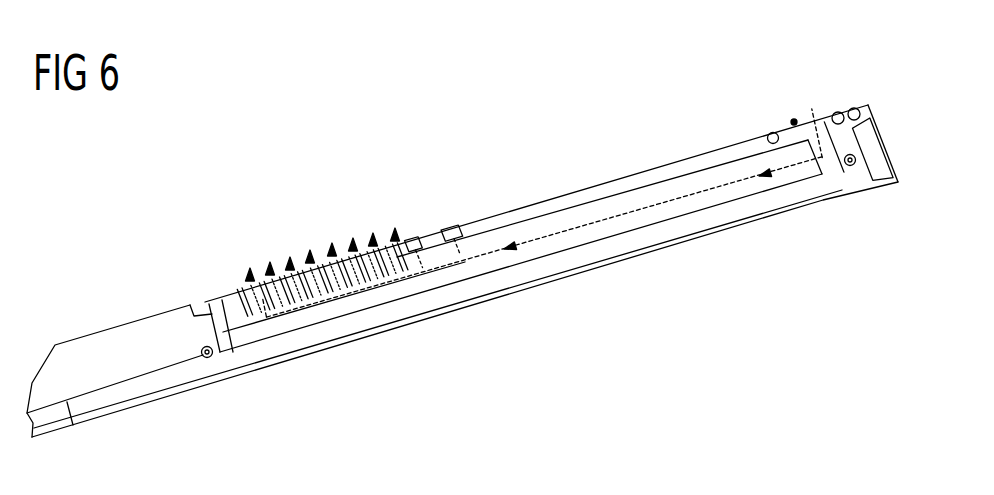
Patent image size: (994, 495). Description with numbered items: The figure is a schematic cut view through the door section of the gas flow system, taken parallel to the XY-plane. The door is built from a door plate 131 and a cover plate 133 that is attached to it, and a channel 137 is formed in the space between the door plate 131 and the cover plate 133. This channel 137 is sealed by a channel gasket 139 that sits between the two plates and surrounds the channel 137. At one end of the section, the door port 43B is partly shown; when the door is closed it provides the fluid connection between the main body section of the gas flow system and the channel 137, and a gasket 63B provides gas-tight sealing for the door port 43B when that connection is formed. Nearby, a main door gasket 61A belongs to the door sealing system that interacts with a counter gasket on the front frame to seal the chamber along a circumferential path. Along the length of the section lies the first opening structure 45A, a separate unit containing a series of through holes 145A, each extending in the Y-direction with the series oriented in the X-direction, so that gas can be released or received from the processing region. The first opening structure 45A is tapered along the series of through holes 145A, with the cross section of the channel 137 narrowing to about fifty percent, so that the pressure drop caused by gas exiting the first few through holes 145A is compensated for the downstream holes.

The door plate 131 is at (143, 321).
The cover plate 133 is at (598, 261).
The channel 137 is at (652, 186).
The through holes 145A is at (248, 292).
The first opening structure 45A is at (362, 240).
The channel gasket 139 is at (208, 359).
The door port 43B is at (793, 119).
The gasket 63B is at (836, 112).
The main door gasket 61A is at (857, 108).